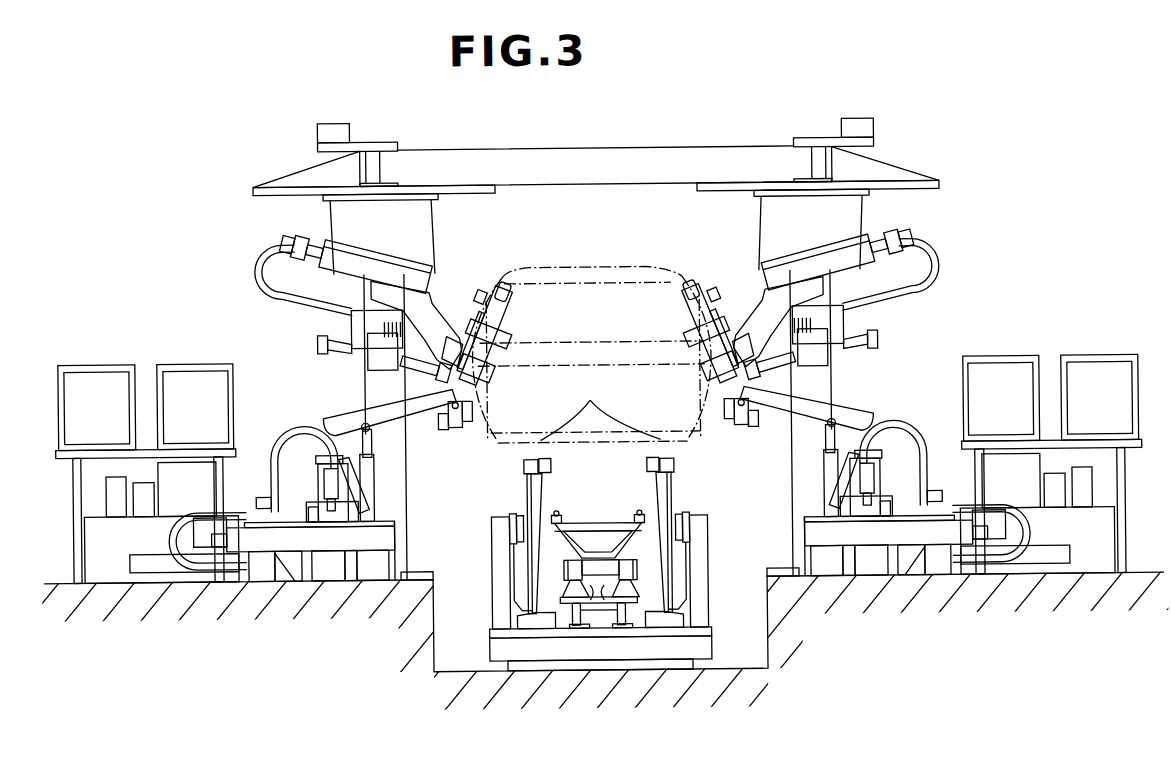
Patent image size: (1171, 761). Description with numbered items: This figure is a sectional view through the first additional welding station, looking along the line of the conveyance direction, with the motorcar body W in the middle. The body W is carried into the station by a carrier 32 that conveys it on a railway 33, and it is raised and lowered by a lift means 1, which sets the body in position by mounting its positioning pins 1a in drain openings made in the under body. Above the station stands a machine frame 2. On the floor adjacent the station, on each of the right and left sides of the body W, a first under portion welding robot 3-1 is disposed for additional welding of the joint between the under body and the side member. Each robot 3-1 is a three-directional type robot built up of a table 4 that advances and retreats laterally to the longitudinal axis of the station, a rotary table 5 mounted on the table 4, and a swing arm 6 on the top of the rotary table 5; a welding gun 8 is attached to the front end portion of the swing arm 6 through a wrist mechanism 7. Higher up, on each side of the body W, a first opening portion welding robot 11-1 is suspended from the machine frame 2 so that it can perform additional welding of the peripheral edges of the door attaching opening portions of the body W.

The lift means 1 is at (516, 560).
The positioning pins 1a is at (600, 405).
The machine frame 2 is at (553, 158).
The first under portion welding robot 3-1 is at (322, 568).
The table 4 is at (340, 505).
The rotary table 5 is at (315, 442).
The swing arm 6 is at (380, 407).
The wrist mechanism 7 is at (452, 425).
The welding gun 8 is at (502, 440).
The first opening portion welding robot 11-1 is at (328, 324).
The carrier 32 is at (600, 523).
The railway 33 is at (602, 595).
The motorcar body W is at (577, 265).